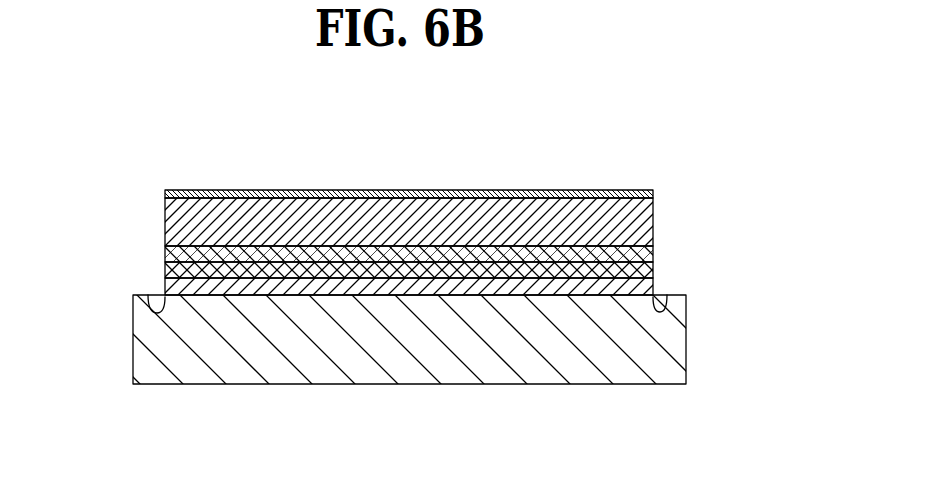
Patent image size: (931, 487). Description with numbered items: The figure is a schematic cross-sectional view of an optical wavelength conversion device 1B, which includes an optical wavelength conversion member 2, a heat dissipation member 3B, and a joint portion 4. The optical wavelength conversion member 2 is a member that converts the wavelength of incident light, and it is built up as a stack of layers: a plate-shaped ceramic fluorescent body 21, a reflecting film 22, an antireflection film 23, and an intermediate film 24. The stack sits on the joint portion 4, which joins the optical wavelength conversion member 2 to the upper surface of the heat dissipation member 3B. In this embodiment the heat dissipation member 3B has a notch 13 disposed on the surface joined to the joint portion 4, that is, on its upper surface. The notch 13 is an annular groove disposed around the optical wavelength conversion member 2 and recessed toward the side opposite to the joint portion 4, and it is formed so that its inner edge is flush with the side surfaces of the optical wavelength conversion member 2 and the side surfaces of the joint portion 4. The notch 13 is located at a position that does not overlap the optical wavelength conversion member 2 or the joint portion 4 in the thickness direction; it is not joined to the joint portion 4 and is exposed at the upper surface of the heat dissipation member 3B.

The optical wavelength conversion device 1B is at (491, 132).
The optical wavelength conversion member 2 is at (155, 226).
The heat dissipation member 3B is at (158, 338).
The joint portion 4 is at (165, 283).
The notch 13 is at (660, 298).
The plate-shaped ceramic fluorescent body 21 is at (636, 218).
The reflecting film 22 is at (646, 252).
The antireflection film 23 is at (619, 190).
The intermediate film 24 is at (653, 272).